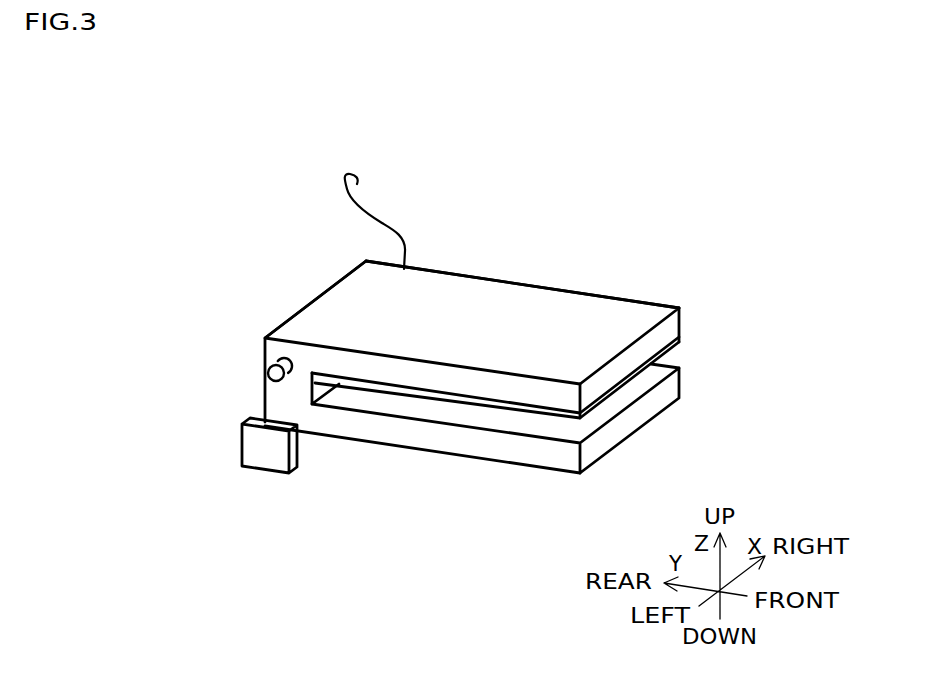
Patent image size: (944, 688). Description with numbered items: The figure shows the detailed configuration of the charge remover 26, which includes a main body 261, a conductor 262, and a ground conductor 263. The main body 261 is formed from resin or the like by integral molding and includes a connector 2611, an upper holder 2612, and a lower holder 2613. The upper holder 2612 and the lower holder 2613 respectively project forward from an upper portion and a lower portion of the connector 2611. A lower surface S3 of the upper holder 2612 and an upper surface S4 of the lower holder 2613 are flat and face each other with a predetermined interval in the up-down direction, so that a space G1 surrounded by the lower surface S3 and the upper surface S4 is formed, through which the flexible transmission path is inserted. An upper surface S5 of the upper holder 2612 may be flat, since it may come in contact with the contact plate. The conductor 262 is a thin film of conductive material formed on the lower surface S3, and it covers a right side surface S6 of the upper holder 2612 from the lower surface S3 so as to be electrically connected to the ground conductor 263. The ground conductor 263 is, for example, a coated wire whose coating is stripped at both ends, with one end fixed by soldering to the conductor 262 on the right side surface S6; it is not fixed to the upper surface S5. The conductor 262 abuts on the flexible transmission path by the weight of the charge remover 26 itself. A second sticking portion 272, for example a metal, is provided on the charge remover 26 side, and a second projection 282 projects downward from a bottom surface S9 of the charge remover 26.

The charge remover 26 is at (274, 266).
The main body 261 is at (540, 300).
The connector 2611 is at (308, 323).
The upper holder 2612 is at (600, 333).
The lower holder 2613 is at (453, 442).
The conductor 262 is at (668, 352).
The ground conductor 263 is at (373, 210).
The second sticking portion 272 is at (262, 365).
The second projection 282 is at (257, 446).
The lower surface S3 is at (617, 389).
The upper surface S4 is at (583, 425).
The upper surface S5 is at (645, 310).
The right side surface S6 is at (415, 267).
The bottom surface S9 is at (362, 443).
The space G1 is at (440, 418).